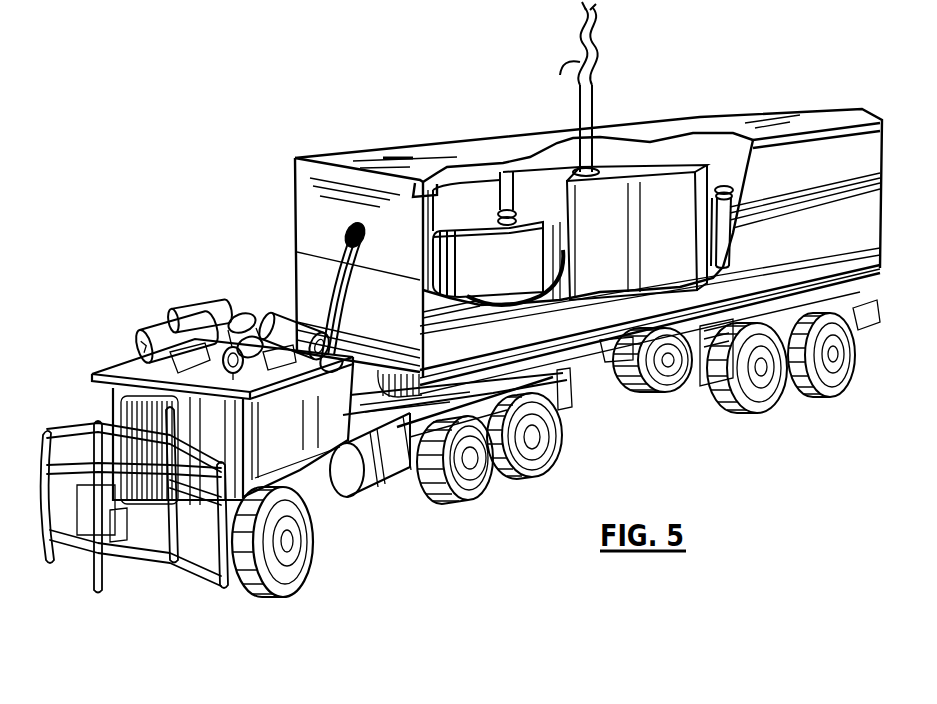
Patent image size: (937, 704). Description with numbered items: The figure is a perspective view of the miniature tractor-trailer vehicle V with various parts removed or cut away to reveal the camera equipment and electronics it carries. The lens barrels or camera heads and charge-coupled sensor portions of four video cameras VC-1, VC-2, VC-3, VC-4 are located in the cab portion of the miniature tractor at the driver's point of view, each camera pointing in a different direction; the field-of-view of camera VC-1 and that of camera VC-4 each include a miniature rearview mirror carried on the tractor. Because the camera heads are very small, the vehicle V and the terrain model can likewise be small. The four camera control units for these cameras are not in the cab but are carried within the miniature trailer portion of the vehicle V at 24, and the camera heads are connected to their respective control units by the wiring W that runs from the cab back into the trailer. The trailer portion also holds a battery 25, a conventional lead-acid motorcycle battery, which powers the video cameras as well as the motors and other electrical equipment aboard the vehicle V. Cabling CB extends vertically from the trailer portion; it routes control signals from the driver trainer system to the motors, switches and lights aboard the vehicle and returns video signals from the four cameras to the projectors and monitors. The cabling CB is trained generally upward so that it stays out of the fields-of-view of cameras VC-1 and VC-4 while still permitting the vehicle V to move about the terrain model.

The cabling CB is at (573, 73).
The camera control units 24 is at (503, 213).
The battery 25 is at (612, 249).
The miniature vehicle V is at (197, 208).
The wiring W is at (297, 246).
The video camera VC-1 is at (283, 318).
The video camera VC-2 is at (250, 362).
The video camera VC-3 is at (140, 328).
The video camera VC-4 is at (203, 298).